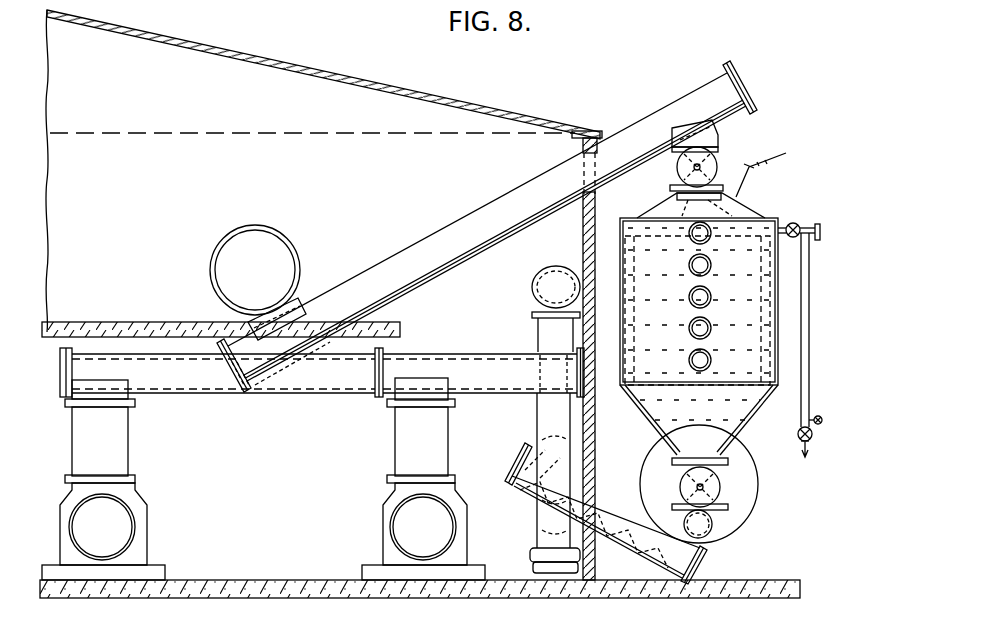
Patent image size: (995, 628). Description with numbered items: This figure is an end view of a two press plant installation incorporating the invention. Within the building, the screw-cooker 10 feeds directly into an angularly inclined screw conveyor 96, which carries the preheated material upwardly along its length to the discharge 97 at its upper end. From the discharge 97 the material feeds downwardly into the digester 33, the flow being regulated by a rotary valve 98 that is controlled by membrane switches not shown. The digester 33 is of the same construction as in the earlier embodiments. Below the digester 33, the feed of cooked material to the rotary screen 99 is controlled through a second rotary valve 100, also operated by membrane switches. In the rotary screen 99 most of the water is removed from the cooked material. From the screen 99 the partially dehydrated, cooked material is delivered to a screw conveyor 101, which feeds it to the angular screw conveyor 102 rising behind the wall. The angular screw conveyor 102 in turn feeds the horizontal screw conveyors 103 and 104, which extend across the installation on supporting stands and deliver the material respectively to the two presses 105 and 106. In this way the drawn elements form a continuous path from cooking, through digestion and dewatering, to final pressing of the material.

The screw-cooker 10 is at (253, 238).
The digester 33 is at (747, 366).
The screw conveyor 96 is at (640, 128).
The discharge 97 is at (719, 135).
The rotary valve 98 is at (718, 163).
The rotary screen 99 is at (750, 514).
The rotary valve 100 is at (713, 486).
The screw conveyor 101 is at (604, 495).
The angular screw conveyor 102 is at (540, 425).
The screw conveyor 103 is at (500, 386).
The screw conveyor 104 is at (312, 382).
The press 105 is at (396, 527).
The press 106 is at (137, 527).